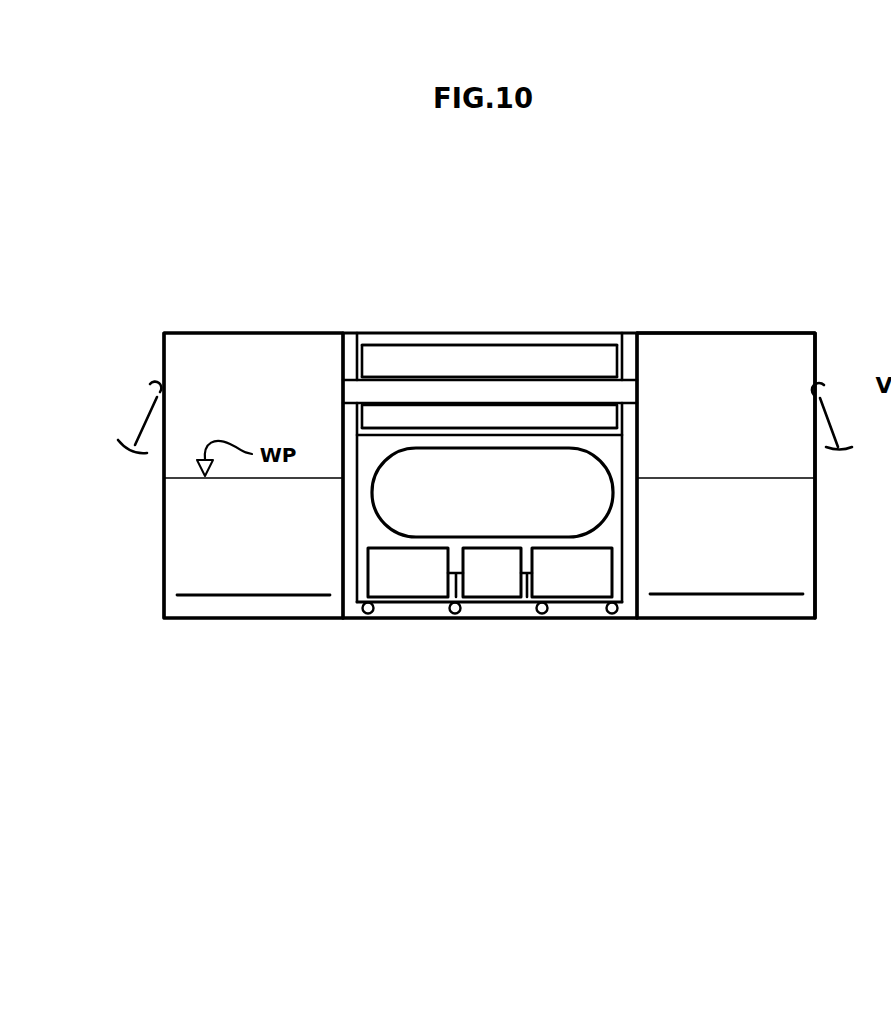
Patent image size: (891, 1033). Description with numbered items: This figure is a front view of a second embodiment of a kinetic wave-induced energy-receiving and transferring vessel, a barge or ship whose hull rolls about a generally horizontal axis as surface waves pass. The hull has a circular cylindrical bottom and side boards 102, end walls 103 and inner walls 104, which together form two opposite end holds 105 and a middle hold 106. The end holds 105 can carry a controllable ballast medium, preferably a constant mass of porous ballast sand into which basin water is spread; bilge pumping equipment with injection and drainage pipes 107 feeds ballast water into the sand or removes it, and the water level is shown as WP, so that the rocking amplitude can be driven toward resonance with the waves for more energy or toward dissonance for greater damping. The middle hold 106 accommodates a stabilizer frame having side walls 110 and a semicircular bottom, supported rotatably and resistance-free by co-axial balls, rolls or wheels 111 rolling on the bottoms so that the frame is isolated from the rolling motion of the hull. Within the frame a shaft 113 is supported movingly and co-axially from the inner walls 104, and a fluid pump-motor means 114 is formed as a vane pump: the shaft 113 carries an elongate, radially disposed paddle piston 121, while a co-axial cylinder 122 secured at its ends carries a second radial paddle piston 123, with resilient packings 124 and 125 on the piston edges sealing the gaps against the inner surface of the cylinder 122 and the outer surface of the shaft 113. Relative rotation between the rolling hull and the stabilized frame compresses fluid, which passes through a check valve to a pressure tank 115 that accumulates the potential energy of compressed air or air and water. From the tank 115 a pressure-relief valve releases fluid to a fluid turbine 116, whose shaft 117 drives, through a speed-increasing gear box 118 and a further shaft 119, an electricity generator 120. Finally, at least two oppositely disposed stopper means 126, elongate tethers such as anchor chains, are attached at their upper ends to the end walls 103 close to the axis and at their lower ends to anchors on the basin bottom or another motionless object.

The circular cylindrical bottom and side boards 102 is at (700, 617).
The end walls 103 is at (164, 556).
The inner walls 104 is at (341, 349).
The end holds 105 is at (768, 358).
The middle hold 106 is at (343, 620).
The injection and drainage pipes 107 is at (243, 597).
The side walls 110 is at (612, 452).
The balls or rolls or wheels 111 is at (607, 618).
The shaft 113 is at (386, 396).
The fluid pump-motor means 114 is at (546, 318).
The pressure tank 115 is at (476, 508).
The fluid turbine 116 is at (403, 580).
The shaft 117 is at (447, 590).
The gear box 118 is at (490, 580).
The shaft 119 is at (527, 585).
The electricity generator 120 is at (568, 583).
The paddle piston 121 is at (585, 430).
The cylinder 122 is at (430, 340).
The paddle piston 123 is at (476, 356).
The resilient packing 124 is at (552, 372).
The resilient packing 125 is at (567, 412).
The stopper means 126 is at (143, 413).